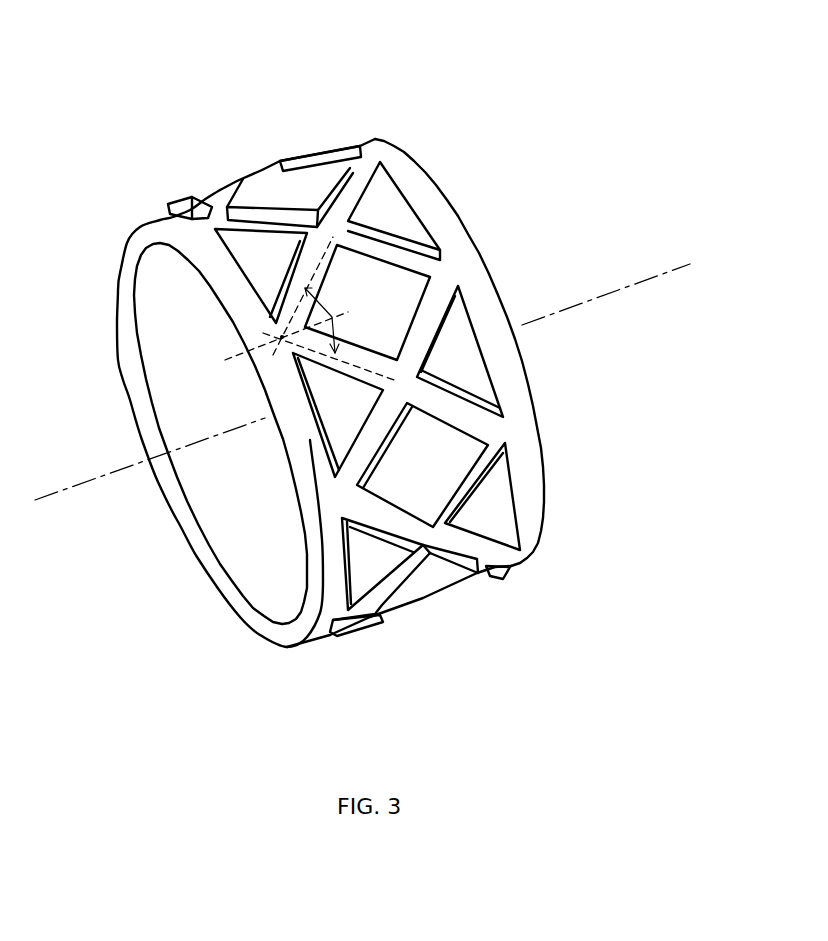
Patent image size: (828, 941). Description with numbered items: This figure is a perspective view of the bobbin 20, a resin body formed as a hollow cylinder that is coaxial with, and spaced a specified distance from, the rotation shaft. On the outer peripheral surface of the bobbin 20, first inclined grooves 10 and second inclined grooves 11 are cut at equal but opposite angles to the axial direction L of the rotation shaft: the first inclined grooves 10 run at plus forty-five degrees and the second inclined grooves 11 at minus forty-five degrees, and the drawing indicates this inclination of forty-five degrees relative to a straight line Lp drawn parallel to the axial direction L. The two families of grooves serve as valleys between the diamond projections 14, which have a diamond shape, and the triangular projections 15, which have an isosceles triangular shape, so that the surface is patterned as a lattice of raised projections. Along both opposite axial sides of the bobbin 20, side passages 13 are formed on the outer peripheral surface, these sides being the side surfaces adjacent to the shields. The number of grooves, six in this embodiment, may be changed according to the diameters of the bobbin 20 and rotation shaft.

The bobbin 20 is at (375, 329).
The first inclined grooves 10 is at (290, 163).
The second inclined grooves 11 is at (382, 390).
The side passages 13 is at (505, 350).
The diamond projections 14 is at (437, 583).
The triangular projections 15 is at (462, 424).
The axial direction L is at (690, 262).
The straight line parallel to the axial direction Lp is at (222, 366).